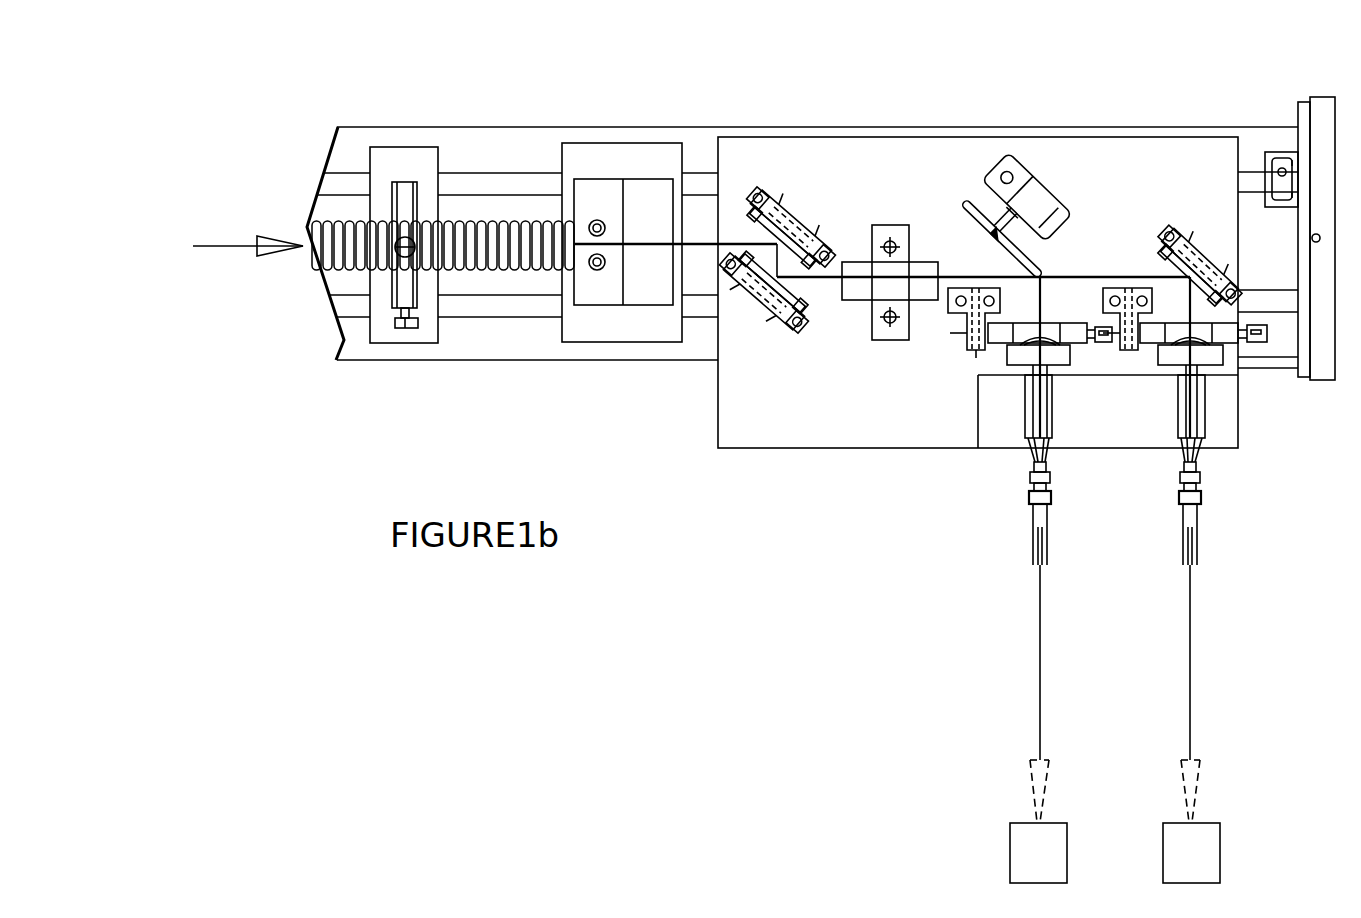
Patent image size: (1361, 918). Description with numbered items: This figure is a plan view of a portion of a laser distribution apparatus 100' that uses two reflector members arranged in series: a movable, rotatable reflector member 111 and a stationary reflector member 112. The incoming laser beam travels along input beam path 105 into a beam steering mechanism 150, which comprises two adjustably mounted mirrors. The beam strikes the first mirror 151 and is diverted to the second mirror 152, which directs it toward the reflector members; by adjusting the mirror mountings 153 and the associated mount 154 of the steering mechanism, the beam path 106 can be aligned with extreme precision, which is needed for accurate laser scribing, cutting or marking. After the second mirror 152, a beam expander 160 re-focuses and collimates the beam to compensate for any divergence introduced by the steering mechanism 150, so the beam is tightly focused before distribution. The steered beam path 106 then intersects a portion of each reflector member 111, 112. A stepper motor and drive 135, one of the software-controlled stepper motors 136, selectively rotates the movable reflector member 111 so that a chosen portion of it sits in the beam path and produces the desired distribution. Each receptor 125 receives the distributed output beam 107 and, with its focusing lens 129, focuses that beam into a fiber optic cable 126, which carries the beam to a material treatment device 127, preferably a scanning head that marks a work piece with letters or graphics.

The laser distribution apparatus 100' is at (821, 236).
The input beam path 105 is at (207, 245).
The beam path 106 is at (962, 277).
The output beam 107 is at (1043, 285).
The movable reflector member 111 is at (957, 197).
The stationary reflector member 112 is at (1197, 225).
The receptor 125 is at (1015, 363).
The fiber optic cable 126 is at (1183, 540).
The material treatment device 127 is at (1163, 863).
The focusing lens 129 is at (1050, 340).
The stepper motor and drive 135 is at (988, 158).
The stepper motors 136 is at (1020, 180).
The beam steering mechanism 150 is at (758, 304).
The first mirror 151 is at (798, 250).
The second mirror 152 is at (806, 303).
The mirror mountings 153 is at (758, 198).
The mirror mount base 154 is at (743, 277).
The beam expander 160 is at (870, 222).